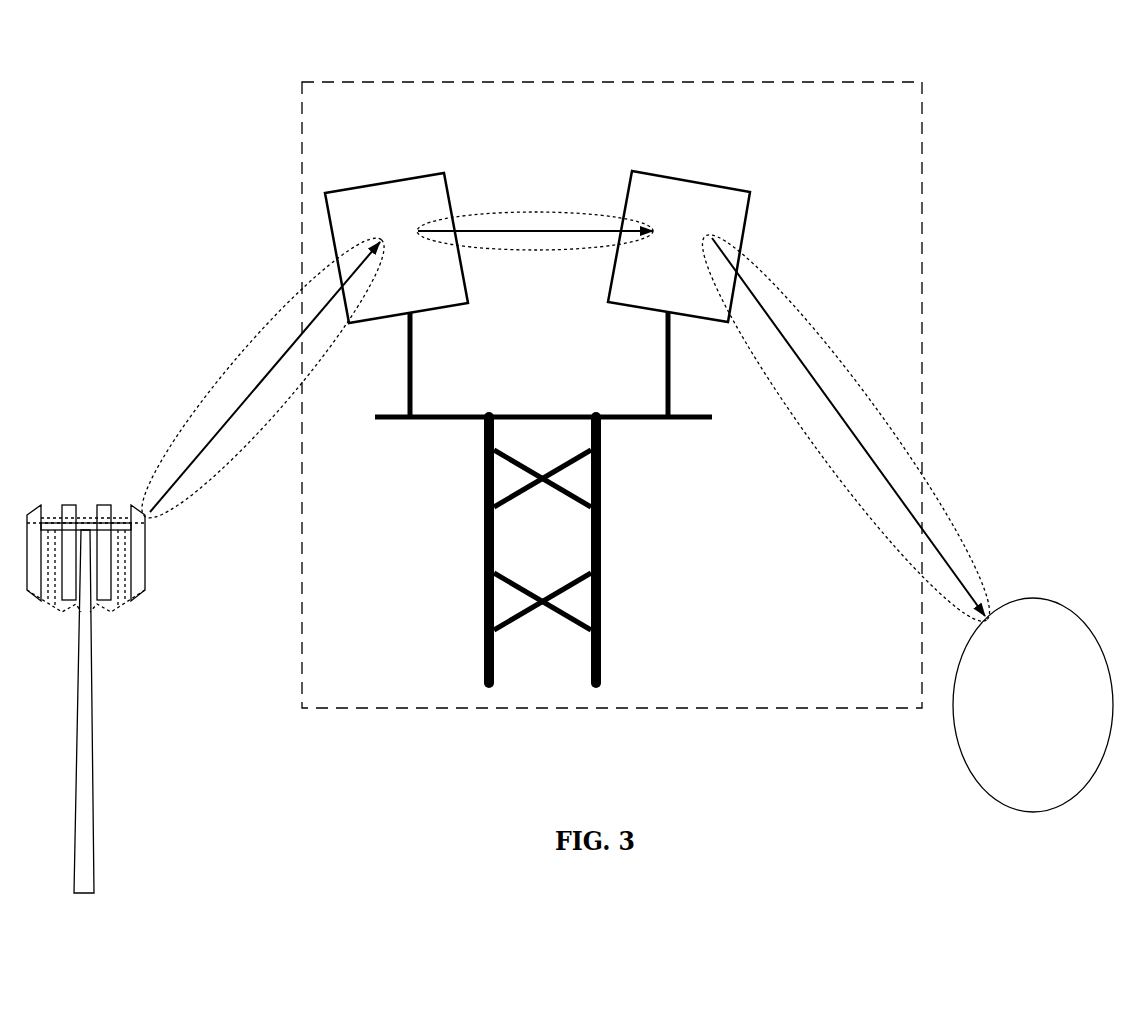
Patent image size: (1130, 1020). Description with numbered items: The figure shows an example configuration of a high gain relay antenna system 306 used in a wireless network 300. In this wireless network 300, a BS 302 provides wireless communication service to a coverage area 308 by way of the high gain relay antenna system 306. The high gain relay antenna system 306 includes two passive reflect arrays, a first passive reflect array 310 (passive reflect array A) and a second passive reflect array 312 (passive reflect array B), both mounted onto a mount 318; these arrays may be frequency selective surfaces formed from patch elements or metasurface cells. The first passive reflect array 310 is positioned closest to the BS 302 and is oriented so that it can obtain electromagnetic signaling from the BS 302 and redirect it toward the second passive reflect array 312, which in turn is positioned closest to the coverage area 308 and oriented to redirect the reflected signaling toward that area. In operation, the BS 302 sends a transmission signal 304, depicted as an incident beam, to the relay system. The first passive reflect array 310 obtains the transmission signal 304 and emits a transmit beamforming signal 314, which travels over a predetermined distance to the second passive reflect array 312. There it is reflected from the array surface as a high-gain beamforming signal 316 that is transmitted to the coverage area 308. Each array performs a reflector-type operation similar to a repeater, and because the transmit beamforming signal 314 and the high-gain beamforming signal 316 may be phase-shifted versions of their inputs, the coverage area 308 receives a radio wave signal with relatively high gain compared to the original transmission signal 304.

The wireless network 300 is at (886, 24).
The BS 302 is at (148, 565).
The transmission signal 304 is at (191, 463).
The high gain relay antenna system 306 is at (385, 82).
The coverage area 308 is at (1051, 600).
The first passive reflect array 310 is at (446, 185).
The second passive reflect array 312 is at (749, 190).
The transmit beamforming signal 314 is at (540, 213).
The high-gain beamforming signal 316 is at (957, 578).
The mount 318 is at (601, 524).